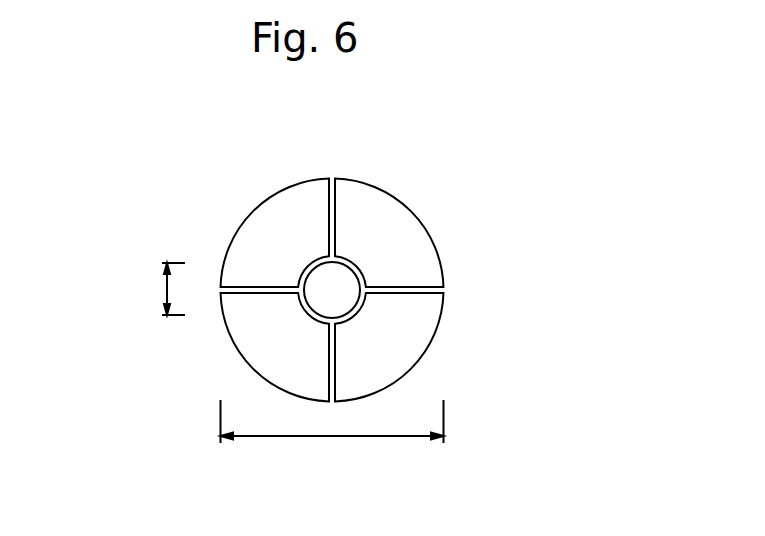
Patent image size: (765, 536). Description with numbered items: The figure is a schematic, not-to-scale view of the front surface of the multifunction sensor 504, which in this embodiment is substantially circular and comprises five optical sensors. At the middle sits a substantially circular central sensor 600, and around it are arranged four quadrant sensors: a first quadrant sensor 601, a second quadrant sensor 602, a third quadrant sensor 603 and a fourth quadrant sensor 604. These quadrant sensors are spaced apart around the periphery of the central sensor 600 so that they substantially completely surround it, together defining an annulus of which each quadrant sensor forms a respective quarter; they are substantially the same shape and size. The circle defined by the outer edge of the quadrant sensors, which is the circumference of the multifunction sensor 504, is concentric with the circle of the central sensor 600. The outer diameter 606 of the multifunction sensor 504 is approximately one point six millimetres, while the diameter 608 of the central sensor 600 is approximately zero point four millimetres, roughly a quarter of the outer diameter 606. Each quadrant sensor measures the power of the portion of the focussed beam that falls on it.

The multifunction sensor 504 is at (217, 202).
The central sensor 600 is at (335, 287).
The first quadrant sensor 601 is at (287, 188).
The second quadrant sensor 602 is at (430, 235).
The third quadrant sensor 603 is at (235, 352).
The fourth quadrant sensor 604 is at (425, 353).
The outer diameter 606 is at (343, 436).
The diameter 608 is at (167, 288).